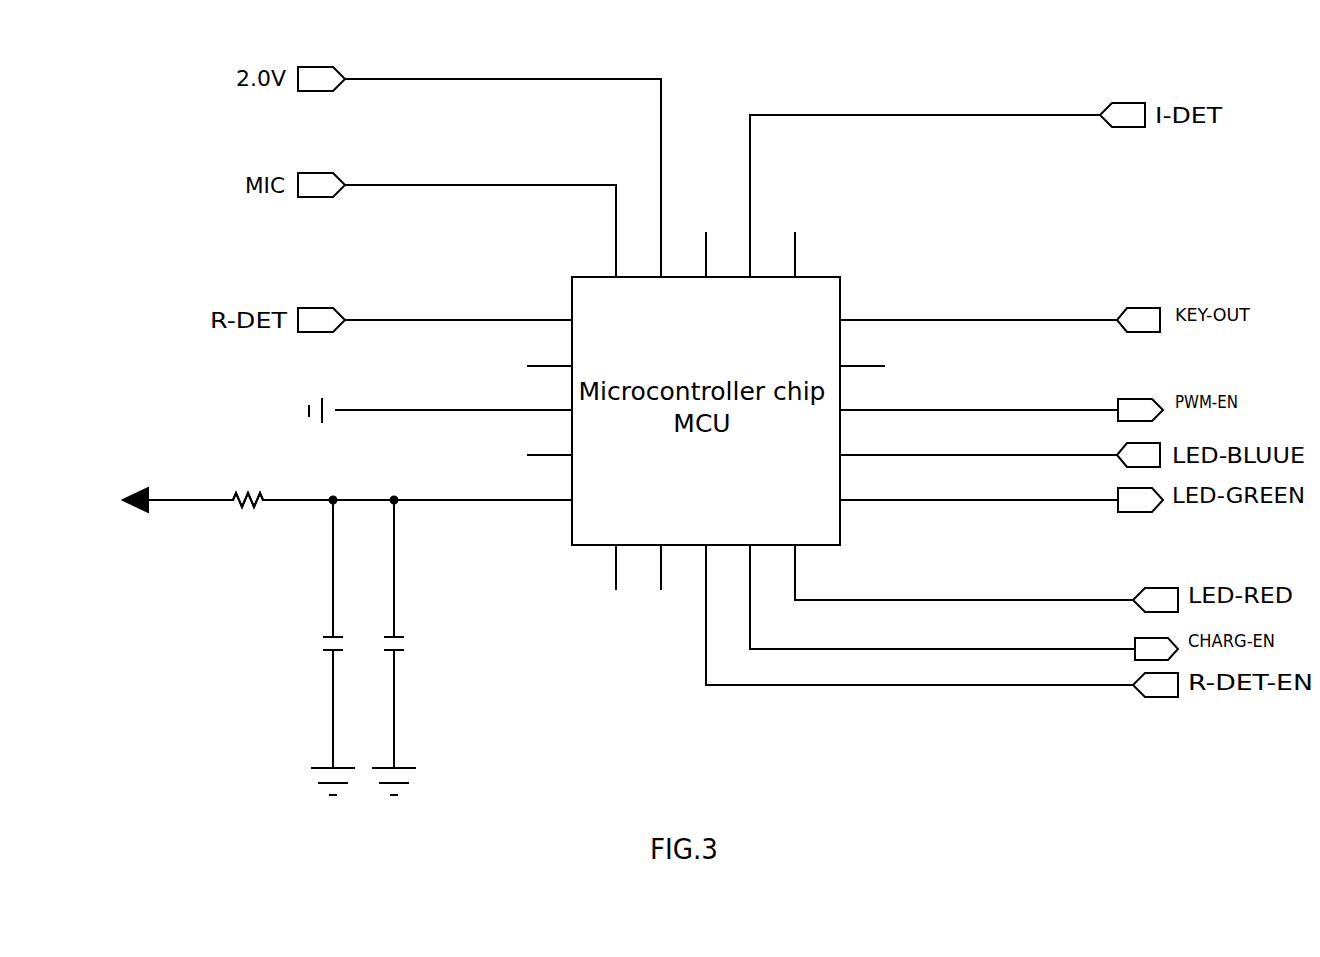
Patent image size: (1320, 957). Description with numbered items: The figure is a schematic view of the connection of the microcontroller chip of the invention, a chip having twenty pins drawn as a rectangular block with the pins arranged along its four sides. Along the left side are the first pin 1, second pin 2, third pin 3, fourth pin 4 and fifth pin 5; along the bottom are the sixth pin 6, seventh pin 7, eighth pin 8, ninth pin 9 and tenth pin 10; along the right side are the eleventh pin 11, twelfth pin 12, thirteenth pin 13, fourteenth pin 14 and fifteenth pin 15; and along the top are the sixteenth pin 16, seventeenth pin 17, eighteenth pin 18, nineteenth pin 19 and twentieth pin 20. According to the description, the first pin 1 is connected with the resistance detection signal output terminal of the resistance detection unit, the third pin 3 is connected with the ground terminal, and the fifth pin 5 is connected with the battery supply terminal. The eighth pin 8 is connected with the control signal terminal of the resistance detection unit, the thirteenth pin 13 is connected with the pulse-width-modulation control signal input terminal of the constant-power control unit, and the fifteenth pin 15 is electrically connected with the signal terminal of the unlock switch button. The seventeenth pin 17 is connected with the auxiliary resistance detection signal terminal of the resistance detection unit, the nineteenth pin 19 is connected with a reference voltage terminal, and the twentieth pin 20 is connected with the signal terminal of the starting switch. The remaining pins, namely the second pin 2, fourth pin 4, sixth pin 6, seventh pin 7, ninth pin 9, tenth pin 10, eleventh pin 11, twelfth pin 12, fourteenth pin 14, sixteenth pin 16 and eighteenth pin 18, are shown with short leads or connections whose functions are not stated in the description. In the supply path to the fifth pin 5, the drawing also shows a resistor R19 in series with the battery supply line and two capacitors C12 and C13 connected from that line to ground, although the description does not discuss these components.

The first pin 1 is at (468, 311).
The second pin 2 is at (559, 359).
The third pin 3 is at (450, 406).
The fourth pin 4 is at (559, 449).
The fifth pin 5 is at (324, 497).
The sixth pin 6 is at (611, 552).
The seventh pin 7 is at (657, 552).
The eighth pin 8 is at (912, 599).
The ninth pin 9 is at (935, 581).
The tenth pin 10 is at (957, 556).
The eleventh pin 11 is at (962, 494).
The twelfth pin 12 is at (961, 449).
The thirteenth pin 13 is at (962, 404).
The fourteenth pin 14 is at (845, 365).
The fifteenth pin 15 is at (961, 318).
The sixteenth pin 16 is at (797, 268).
The seventeenth pin 17 is at (920, 210).
The eighteenth pin 18 is at (699, 268).
The nineteenth pin 19 is at (508, 192).
The twentieth pin 20 is at (483, 245).
The resistor R19 is at (230, 490).
The capacitor C12 is at (336, 647).
The capacitor C13 is at (396, 647).